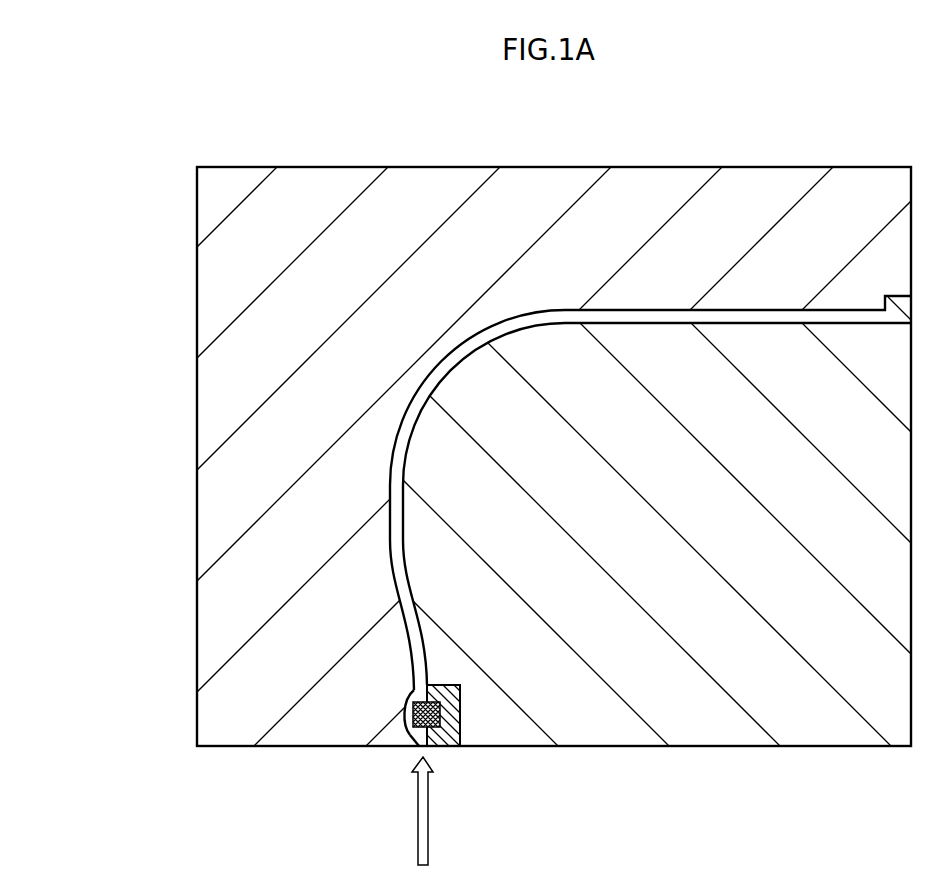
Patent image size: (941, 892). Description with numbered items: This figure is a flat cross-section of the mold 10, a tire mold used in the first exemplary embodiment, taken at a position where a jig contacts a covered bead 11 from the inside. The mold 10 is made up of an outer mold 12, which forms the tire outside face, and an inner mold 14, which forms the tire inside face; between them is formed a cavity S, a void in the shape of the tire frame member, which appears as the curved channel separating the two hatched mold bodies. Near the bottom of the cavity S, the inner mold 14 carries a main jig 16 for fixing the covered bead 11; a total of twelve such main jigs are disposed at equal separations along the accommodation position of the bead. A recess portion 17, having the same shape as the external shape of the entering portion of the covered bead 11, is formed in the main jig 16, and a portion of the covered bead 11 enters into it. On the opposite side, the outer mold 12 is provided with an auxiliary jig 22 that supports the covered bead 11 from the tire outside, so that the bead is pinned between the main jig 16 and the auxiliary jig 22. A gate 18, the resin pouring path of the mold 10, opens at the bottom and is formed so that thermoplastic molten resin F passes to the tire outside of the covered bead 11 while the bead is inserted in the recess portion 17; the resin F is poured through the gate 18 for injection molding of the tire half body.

The mold 10 is at (175, 152).
The outer mold 12 is at (316, 197).
The inner mold 14 is at (830, 720).
The cavity S is at (398, 448).
The covered bead 11 is at (410, 697).
The auxiliary jig 22 is at (412, 717).
The recess portion 17 is at (440, 718).
The main jig 16 is at (448, 748).
The gate 18 is at (420, 750).
The thermoplastic molten resin F is at (428, 828).